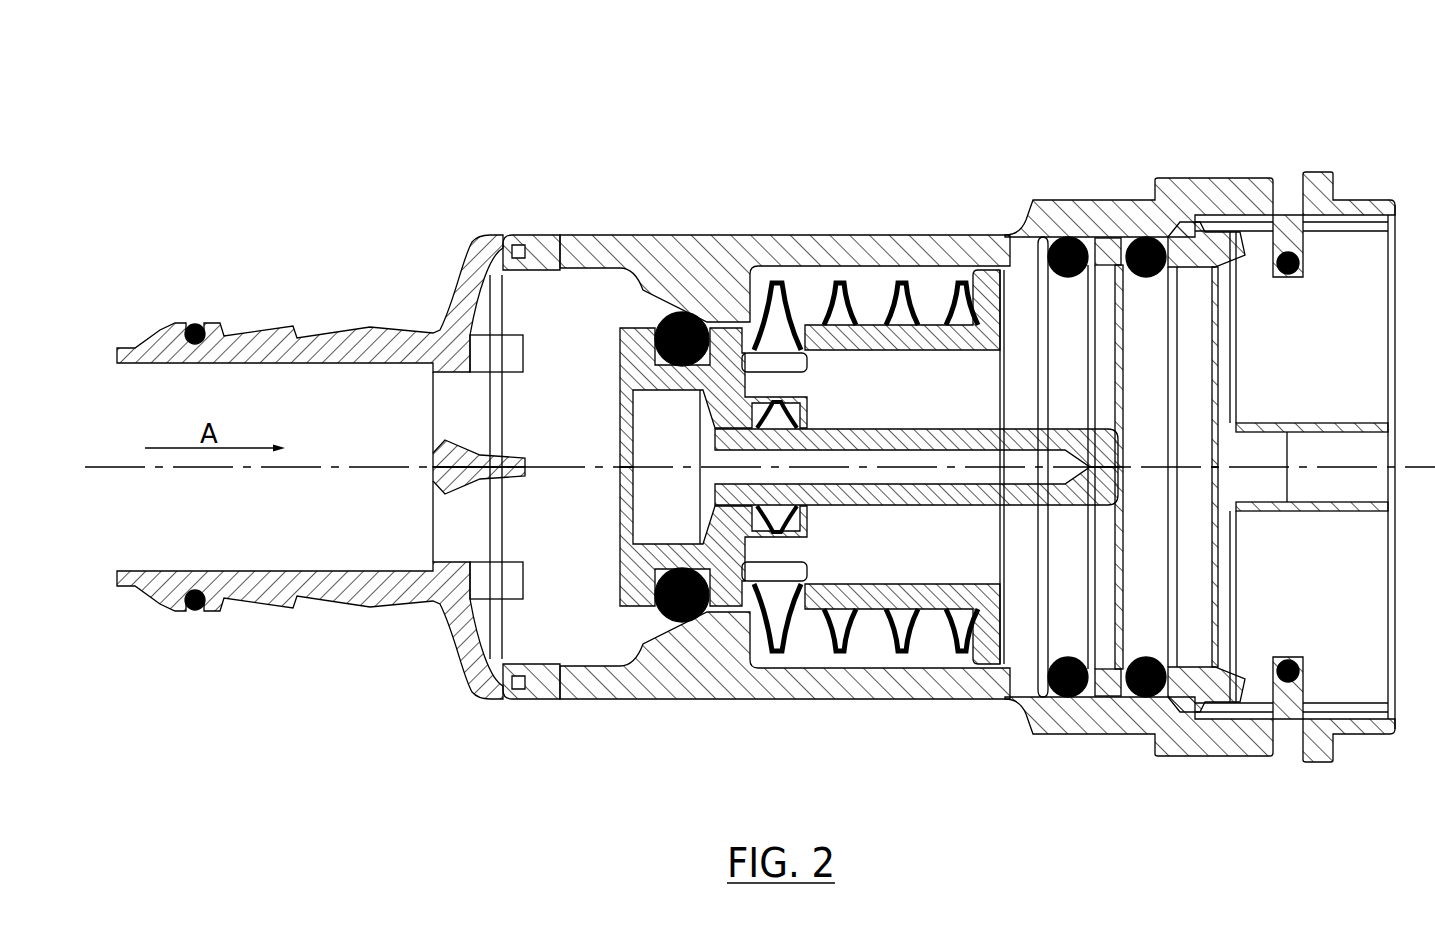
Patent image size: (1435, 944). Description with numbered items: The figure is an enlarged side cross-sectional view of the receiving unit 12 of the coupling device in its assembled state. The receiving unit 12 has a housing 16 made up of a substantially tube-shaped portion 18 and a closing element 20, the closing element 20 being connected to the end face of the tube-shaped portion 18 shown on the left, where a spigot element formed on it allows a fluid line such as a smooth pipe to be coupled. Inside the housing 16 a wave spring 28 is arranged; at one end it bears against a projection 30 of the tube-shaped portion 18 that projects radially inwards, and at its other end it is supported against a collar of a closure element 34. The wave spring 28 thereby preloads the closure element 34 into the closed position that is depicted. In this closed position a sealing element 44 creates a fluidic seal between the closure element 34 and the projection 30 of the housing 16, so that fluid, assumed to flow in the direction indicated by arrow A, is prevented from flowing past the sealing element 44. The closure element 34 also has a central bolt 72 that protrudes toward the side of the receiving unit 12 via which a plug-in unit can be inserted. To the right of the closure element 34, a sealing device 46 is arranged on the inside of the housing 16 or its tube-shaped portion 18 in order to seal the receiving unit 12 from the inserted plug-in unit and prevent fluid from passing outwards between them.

The receiving unit 12 is at (506, 127).
The housing 16 is at (489, 221).
The tube-shaped portion 18 is at (822, 252).
The closing element 20 is at (388, 335).
The wave spring 28 is at (770, 630).
The projection 30 is at (715, 290).
The closure element 34 is at (636, 605).
The sealing element 44 is at (663, 295).
The sealing device 46 is at (1093, 707).
The central bolt 72 is at (862, 505).